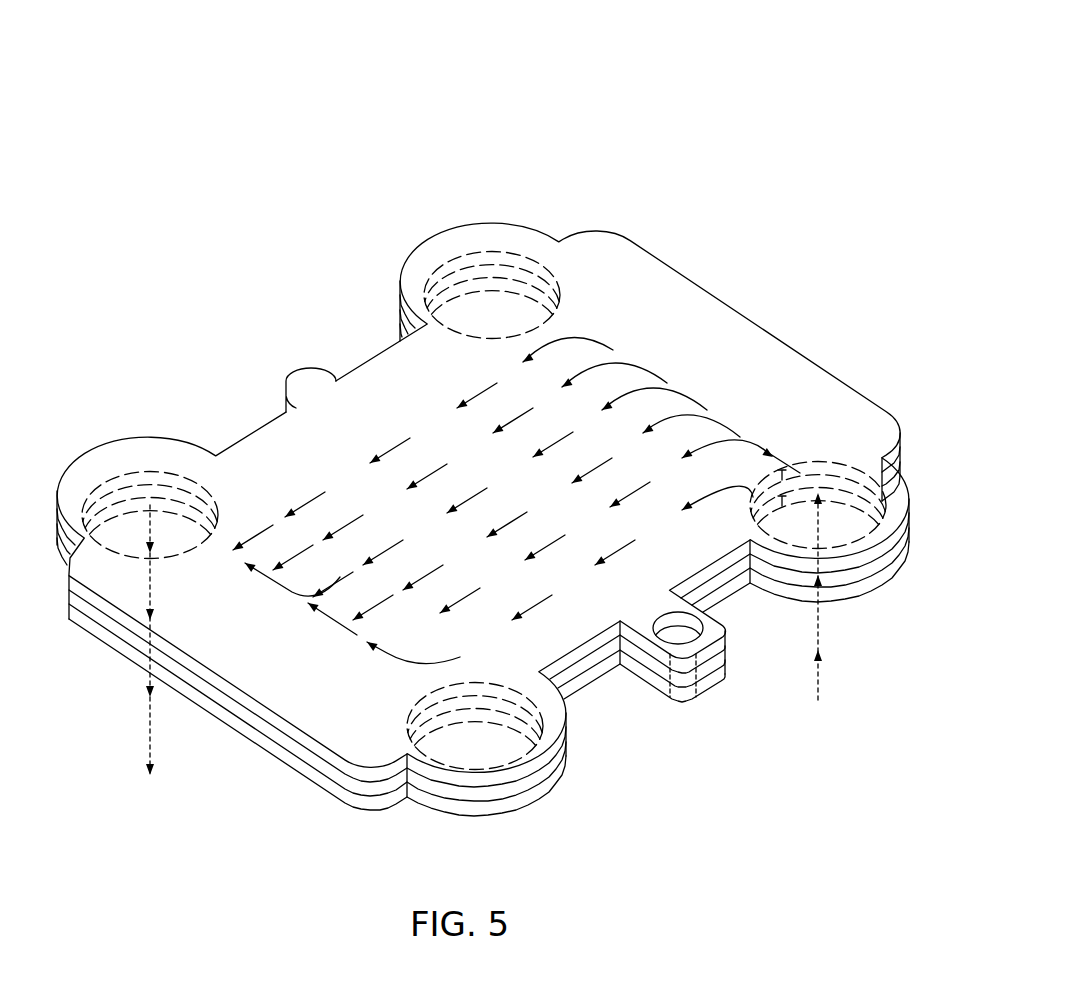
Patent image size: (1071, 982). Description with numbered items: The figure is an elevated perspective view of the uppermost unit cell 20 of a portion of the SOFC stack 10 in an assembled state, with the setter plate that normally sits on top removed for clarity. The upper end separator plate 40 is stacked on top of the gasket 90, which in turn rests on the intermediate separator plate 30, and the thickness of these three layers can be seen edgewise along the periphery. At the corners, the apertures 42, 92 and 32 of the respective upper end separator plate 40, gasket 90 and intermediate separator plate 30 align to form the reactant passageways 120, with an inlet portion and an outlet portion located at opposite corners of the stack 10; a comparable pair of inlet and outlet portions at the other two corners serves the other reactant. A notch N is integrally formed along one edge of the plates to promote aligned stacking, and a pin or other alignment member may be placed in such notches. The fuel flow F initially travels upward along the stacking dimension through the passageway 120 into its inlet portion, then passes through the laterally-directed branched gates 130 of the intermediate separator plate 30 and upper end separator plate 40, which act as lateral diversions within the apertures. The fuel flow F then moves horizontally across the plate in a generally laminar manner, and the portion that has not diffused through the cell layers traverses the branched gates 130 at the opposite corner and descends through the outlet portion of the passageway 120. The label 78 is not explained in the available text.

The SOFC stack 10 is at (765, 103).
The unit cell 20 is at (910, 407).
The upper end separator plate 40 is at (870, 552).
The gasket 90 is at (843, 577).
The intermediate separator plate 30 is at (833, 590).
The reactant passageway 120 is at (517, 325).
The outlet flow passage 78 is at (152, 600).
The laterally-directed branched gates 130 is at (805, 495).
The apertures of the upper end separator plate 42 is at (790, 522).
The conduit-like apertures of the gasket 92 is at (790, 522).
The apertures of the intermediate separator plate 32 is at (790, 522).
The notch N is at (688, 697).
The fuel flow F is at (532, 496).